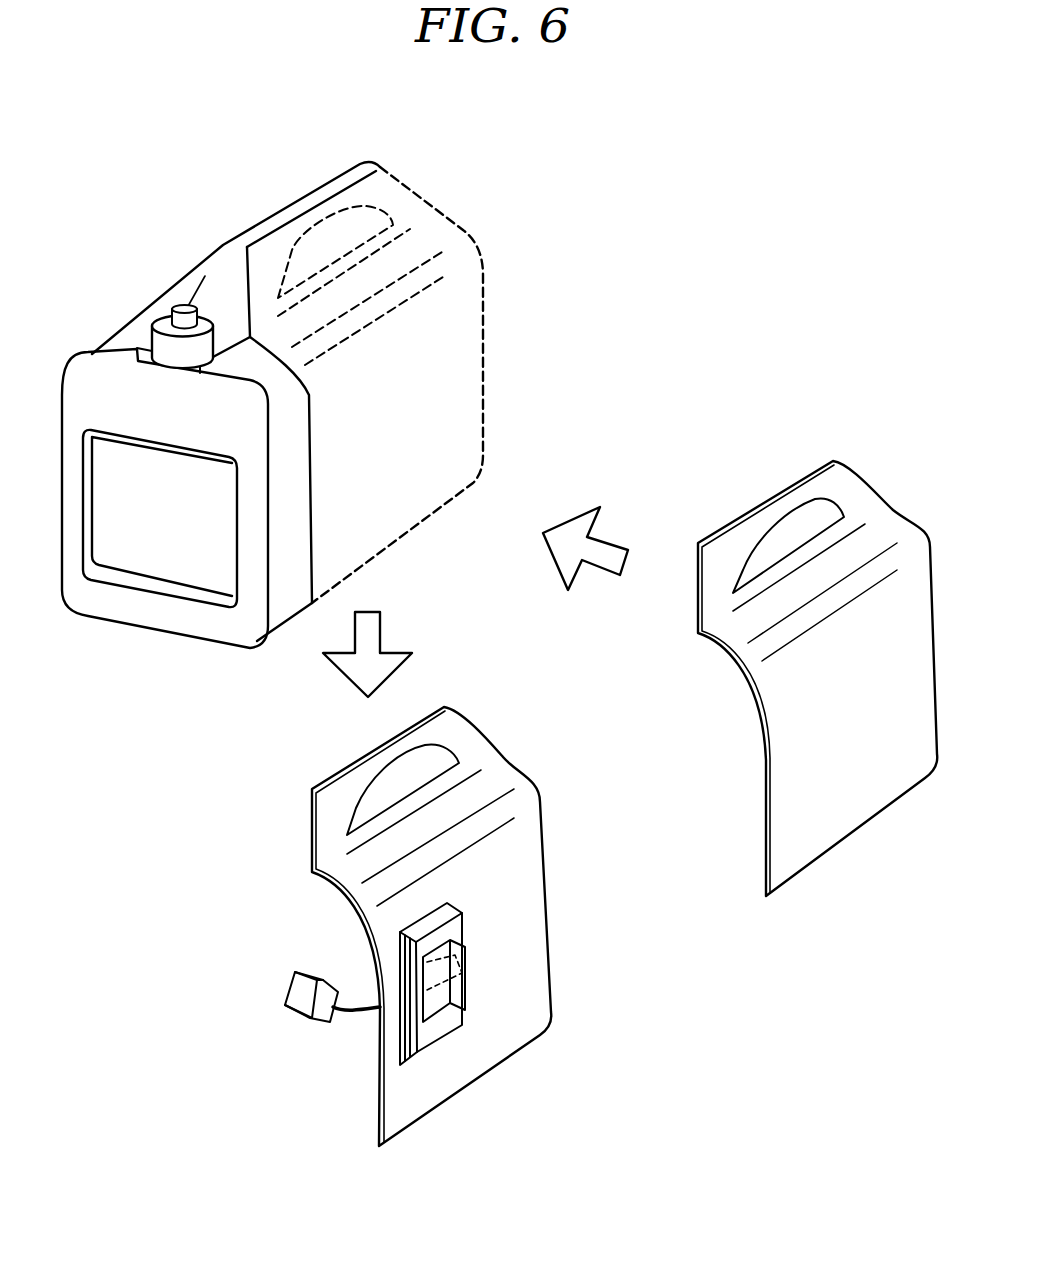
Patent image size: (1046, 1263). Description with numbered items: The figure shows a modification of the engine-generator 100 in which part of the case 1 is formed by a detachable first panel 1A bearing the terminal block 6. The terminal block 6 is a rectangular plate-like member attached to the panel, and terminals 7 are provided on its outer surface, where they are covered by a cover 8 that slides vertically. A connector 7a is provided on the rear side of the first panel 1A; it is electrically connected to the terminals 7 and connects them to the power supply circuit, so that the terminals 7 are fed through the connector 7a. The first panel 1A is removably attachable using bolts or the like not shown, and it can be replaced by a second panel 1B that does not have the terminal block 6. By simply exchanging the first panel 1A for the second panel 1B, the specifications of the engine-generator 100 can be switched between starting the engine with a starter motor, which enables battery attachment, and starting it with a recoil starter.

The engine-generator 100 is at (303, 381).
The case 1 is at (160, 305).
The first panel 1A is at (436, 932).
The second panel 1B is at (835, 830).
The terminal block 6 is at (427, 1026).
The terminals 7 is at (448, 967).
The connector 7a is at (306, 1020).
The cover 8 is at (455, 1004).